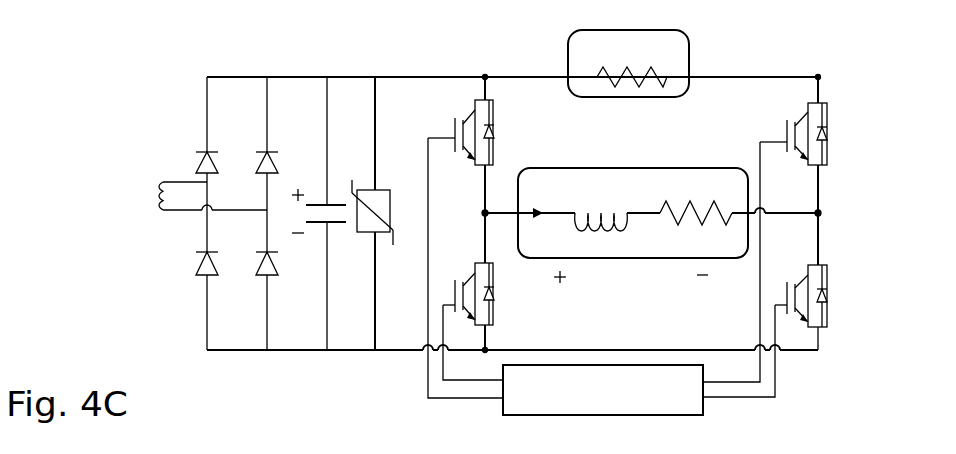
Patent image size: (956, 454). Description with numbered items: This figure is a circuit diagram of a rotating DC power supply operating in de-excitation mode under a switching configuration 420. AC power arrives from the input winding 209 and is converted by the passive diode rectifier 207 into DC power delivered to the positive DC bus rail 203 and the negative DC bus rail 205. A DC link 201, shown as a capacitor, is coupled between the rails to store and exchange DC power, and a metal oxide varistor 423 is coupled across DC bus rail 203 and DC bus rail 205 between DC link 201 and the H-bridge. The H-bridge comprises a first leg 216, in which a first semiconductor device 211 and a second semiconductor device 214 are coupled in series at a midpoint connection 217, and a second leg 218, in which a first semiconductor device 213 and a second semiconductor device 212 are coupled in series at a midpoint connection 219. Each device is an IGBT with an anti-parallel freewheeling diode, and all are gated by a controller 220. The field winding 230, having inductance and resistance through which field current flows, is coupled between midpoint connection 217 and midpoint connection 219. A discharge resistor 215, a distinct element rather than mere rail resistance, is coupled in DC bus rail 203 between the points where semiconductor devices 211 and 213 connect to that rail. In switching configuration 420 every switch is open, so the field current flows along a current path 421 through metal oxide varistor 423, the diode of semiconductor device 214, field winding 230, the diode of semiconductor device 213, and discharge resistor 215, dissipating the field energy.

The DC link 201 is at (321, 203).
The DC bus rail 203 is at (352, 77).
The DC bus rail 205 is at (352, 352).
The rectifier 207 is at (211, 365).
The input winding 209 is at (173, 182).
The first semiconductor device 211 is at (497, 106).
The second semiconductor device 212 is at (828, 312).
The first semiconductor device 213 is at (830, 106).
The second semiconductor device 214 is at (497, 306).
The discharge resistor 215 is at (692, 40).
The first leg 216 is at (503, 184).
The midpoint connection 217 is at (483, 213).
The second leg 218 is at (860, 350).
The midpoint connection 219 is at (822, 213).
The controller 220 is at (705, 407).
The field winding 230 is at (631, 168).
The switching configuration 420 is at (820, 376).
The current path 421 is at (822, 77).
The metal oxide varistor 423 is at (381, 190).